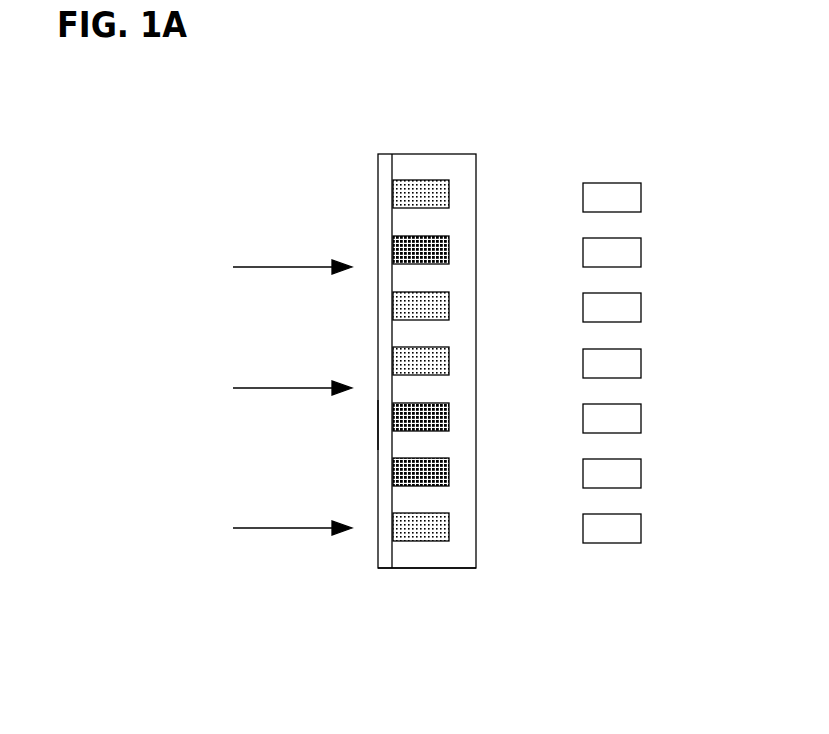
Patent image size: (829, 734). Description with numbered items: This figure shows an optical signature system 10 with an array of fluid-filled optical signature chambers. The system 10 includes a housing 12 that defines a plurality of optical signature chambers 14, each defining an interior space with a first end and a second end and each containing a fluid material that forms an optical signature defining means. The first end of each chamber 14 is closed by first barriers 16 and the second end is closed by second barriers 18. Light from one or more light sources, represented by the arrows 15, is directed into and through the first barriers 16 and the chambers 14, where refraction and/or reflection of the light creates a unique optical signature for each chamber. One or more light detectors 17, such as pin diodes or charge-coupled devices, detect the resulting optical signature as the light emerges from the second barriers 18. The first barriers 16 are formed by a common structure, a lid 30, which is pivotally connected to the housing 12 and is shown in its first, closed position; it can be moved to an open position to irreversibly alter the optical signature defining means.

The optical signature system 10 is at (414, 347).
The housing 12 is at (470, 585).
The optical signature chambers 14 is at (410, 188).
The arrows 15 is at (270, 263).
The first barriers 16 is at (382, 243).
The light detectors 17 is at (625, 252).
The second barriers 18 is at (463, 195).
The lid 30 is at (355, 427).